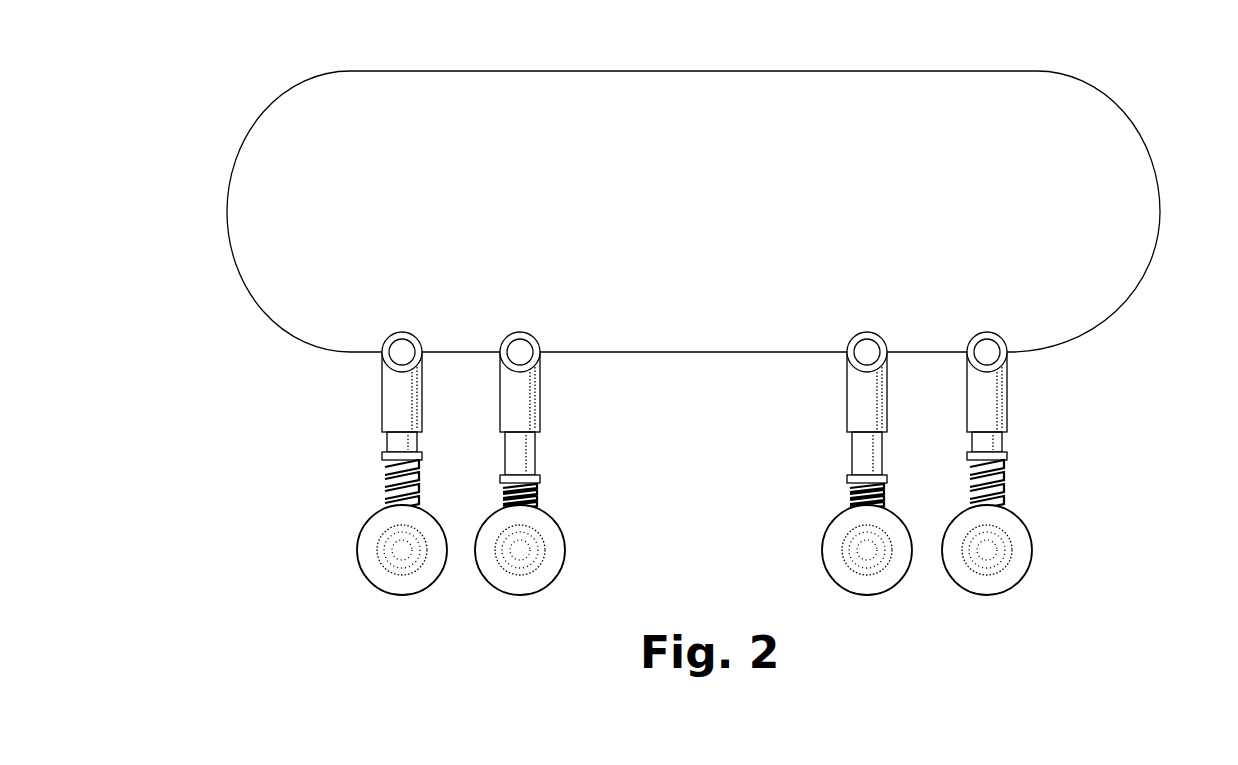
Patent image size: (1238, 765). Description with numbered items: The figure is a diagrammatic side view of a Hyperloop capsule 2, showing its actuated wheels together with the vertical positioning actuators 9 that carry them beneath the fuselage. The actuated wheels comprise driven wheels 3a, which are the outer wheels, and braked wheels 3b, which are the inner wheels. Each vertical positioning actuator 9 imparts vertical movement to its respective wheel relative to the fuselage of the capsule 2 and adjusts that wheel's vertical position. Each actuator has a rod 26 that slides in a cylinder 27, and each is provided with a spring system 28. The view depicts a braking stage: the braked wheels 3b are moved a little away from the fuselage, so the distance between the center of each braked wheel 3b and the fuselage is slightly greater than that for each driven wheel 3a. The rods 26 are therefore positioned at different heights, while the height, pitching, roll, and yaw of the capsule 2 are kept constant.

The capsule 2 is at (1160, 210).
The vertical positioning actuator 9 is at (722, 421).
The driven wheel 3a is at (402, 596).
The braked wheel 3b is at (520, 596).
The rod 26 is at (1003, 440).
The cylinder 27 is at (1008, 386).
The spring system 28 is at (1078, 440).